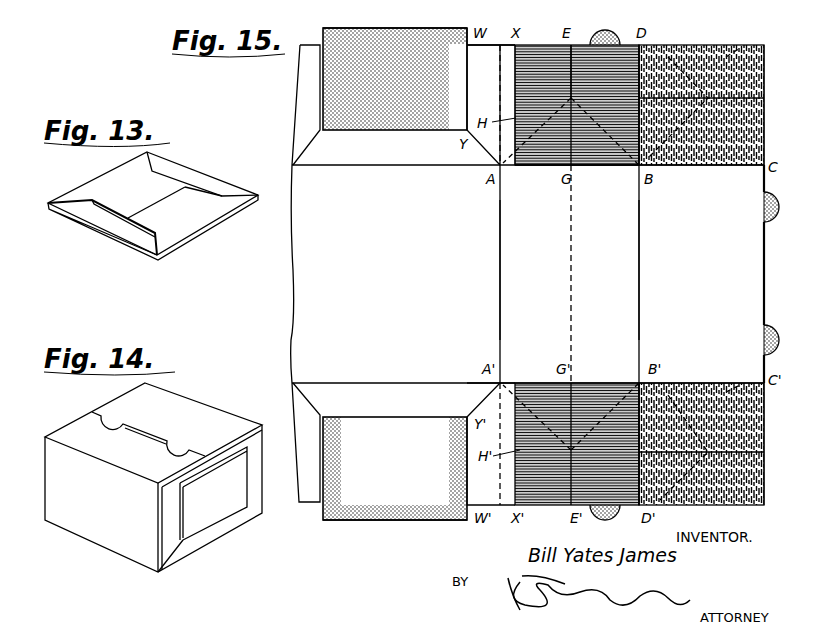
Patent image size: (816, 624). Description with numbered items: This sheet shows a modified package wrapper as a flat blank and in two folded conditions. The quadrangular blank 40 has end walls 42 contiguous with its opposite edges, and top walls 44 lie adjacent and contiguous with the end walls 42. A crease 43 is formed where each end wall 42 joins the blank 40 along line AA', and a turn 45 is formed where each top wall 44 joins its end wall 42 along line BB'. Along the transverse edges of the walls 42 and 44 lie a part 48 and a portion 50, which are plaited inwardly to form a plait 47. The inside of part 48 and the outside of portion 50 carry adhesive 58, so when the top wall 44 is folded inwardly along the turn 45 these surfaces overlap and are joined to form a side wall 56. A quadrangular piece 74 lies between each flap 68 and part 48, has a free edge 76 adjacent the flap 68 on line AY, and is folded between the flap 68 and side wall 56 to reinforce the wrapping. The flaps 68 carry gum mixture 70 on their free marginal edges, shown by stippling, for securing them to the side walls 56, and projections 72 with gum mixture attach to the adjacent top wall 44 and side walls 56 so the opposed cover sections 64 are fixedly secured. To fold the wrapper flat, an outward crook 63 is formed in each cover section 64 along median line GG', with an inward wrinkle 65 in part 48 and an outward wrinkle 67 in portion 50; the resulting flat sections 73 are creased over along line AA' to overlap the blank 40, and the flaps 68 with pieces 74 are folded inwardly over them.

In FIG. 15, the quadrangular blank 40 is at (395, 274).
In FIG. 15, the end wall 42 is at (569, 274).
In FIG. 15, the crease 43 is at (501, 244).
In FIG. 15, the top wall 44 is at (701, 275).
In FIG. 15, the turn 45 is at (640, 283).
In FIG. 15, the plait 47 is at (598, 174).
In FIG. 15, the part 48 is at (534, 160).
In FIG. 15, the portion 50 is at (712, 132).
In FIG. 14, the side wall 56 is at (175, 512).
In FIG. 15, the adhesive 58 is at (545, 66).
In FIG. 15, the outward crook 63 is at (573, 320).
In FIG. 14, the cover section 64 is at (218, 406).
In FIG. 15, the cover section 64 is at (783, 275).
In FIG. 15, the inward wrinkle 65 is at (556, 150).
In FIG. 15, the outward wrinkle 67 is at (572, 66).
In FIG. 13, the flap 68 is at (122, 188).
In FIG. 14, the flap 68 is at (215, 494).
In FIG. 15, the flap 68 is at (395, 274).
In FIG. 15, the gum mixture 70 is at (426, 36).
In FIG. 14, the projection 72 is at (118, 428).
In FIG. 15, the projection 72 is at (614, 34).
In FIG. 13, the flat section 73 is at (205, 172).
In FIG. 15, the quadrangular piece 74 is at (516, 106).
In FIG. 15, the free edge 76 is at (470, 62).